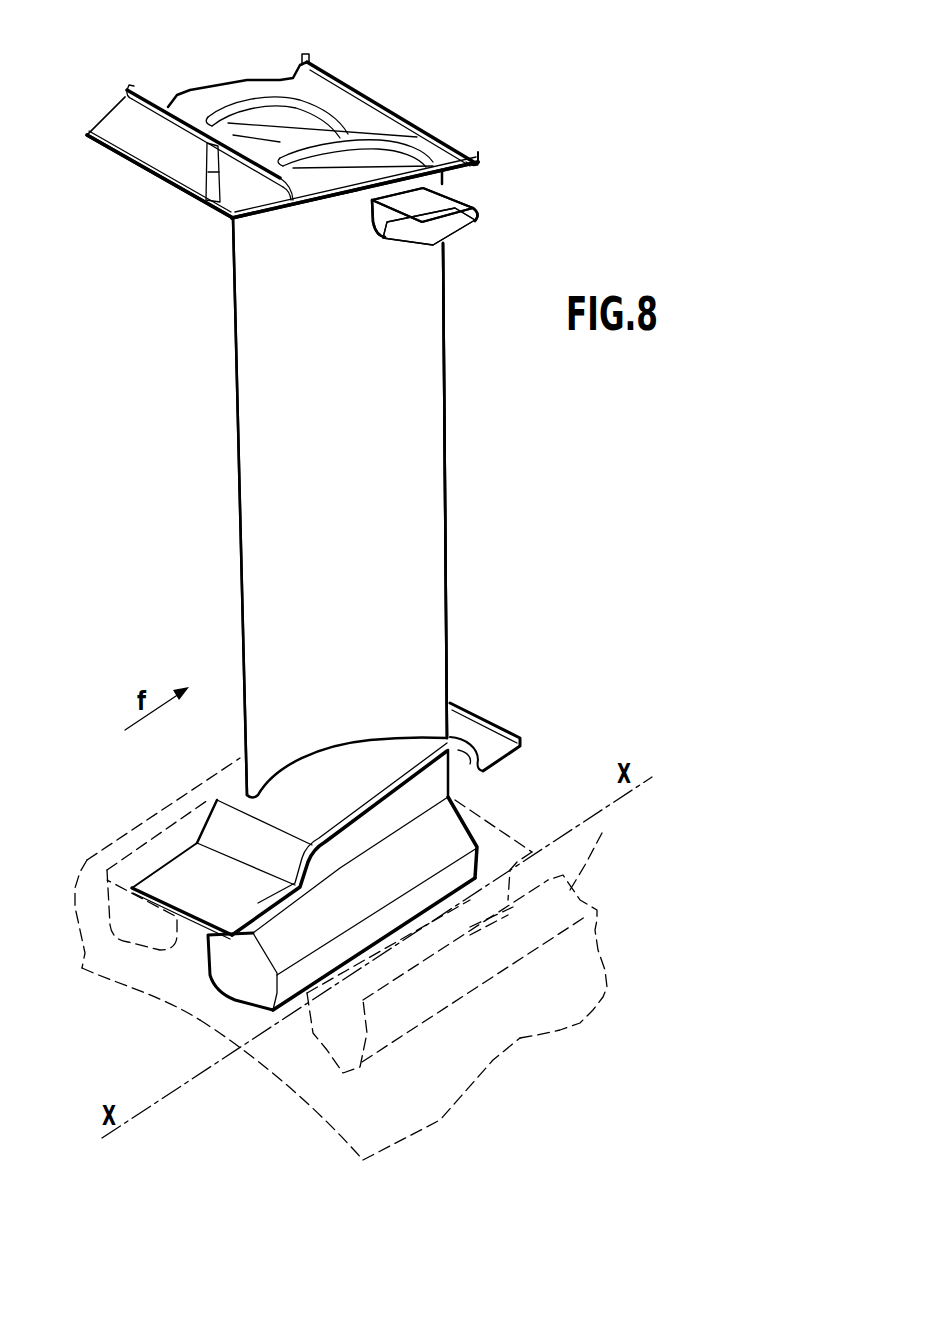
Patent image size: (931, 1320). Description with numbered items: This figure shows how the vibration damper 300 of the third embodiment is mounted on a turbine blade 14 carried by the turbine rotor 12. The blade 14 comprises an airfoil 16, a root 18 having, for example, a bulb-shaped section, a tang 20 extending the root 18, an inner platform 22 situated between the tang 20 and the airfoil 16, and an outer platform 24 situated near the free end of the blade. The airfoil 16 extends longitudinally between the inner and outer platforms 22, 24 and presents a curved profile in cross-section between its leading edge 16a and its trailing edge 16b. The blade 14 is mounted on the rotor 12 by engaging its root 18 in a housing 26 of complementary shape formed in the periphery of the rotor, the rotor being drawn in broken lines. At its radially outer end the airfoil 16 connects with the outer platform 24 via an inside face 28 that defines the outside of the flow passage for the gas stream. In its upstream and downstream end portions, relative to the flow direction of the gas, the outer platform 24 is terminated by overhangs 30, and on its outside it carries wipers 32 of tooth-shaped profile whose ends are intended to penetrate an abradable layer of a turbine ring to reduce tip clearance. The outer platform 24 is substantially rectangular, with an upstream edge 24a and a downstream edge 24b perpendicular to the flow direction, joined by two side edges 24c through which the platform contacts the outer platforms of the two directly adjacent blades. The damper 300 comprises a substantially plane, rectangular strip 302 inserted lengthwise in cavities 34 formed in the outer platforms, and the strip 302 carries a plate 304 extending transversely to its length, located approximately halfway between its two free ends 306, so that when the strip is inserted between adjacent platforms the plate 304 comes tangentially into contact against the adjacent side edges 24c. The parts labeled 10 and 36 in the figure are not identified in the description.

The rotor disk assembly 10 is at (152, 1014).
The turbine rotor 12 is at (351, 959).
The blade 14 is at (218, 507).
The airfoil 16 is at (388, 468).
The leading edge 16a is at (235, 413).
The trailing edge 16b is at (443, 422).
The root 18 is at (236, 977).
The tang 20 is at (436, 789).
The inner platform 22 is at (480, 727).
The outer platform 24 is at (370, 62).
The upstream edge 24a is at (172, 184).
The downstream edge 24b is at (477, 167).
The side edges 24c is at (118, 120).
The housing 26 is at (348, 1040).
The inside face 28 is at (242, 219).
The overhangs 30 is at (160, 150).
The wipers 32 is at (127, 89).
The cavities 34 is at (331, 205).
The stiffening rib 36 is at (228, 105).
The vibration damper 300 is at (500, 221).
The strip 302 is at (420, 203).
The plate 304 is at (390, 220).
The free ends 306 is at (363, 198).